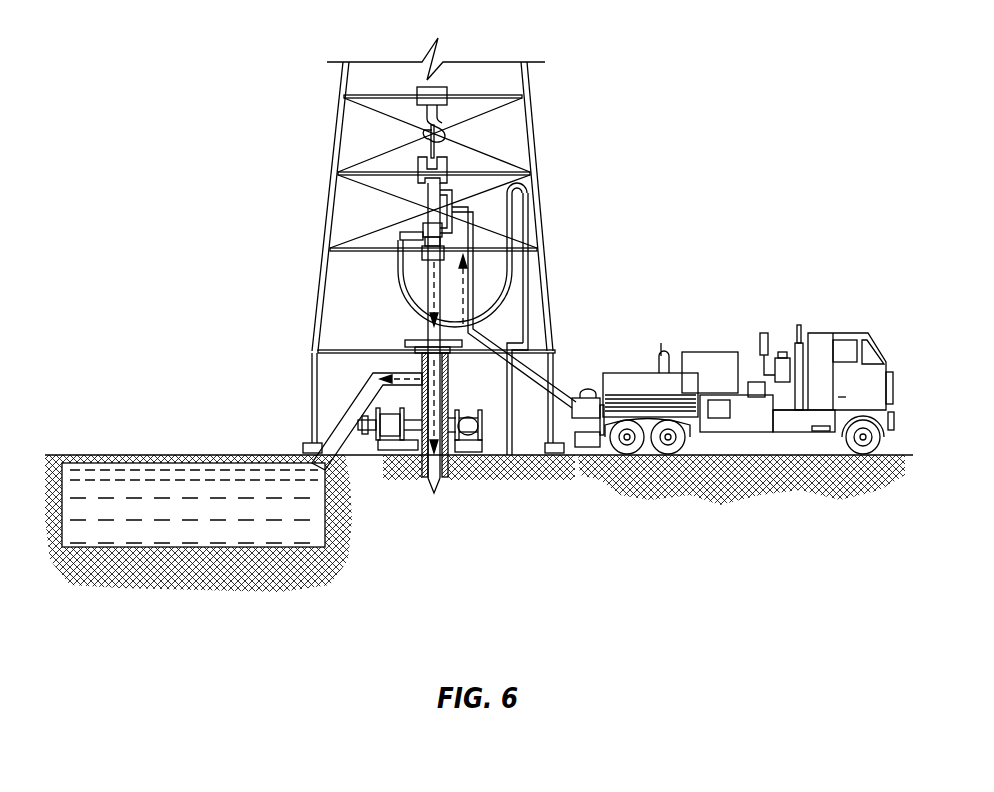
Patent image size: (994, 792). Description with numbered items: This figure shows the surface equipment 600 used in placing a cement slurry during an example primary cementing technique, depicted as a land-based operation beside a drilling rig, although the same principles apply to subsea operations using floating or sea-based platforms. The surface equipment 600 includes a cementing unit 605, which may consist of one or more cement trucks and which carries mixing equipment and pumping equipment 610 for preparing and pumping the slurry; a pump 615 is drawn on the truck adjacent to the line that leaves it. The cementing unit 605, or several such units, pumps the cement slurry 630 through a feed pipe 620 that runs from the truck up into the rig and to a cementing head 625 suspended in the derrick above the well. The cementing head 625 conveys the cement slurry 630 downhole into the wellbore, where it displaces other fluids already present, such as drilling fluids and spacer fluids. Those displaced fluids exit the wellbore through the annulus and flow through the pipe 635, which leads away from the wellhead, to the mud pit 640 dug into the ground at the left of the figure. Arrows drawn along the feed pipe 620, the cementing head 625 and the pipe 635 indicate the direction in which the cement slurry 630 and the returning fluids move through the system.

The surface equipment 600 is at (479, 318).
The cementing unit 605 is at (733, 429).
The mixing equipment and pumping equipment 610 is at (720, 418).
The pump 615 is at (588, 388).
The feed pipe 620 is at (525, 370).
The cementing head 625 is at (455, 158).
The cement slurry 630 is at (432, 297).
The pipe 635 is at (343, 452).
The mud pit 640 is at (188, 548).